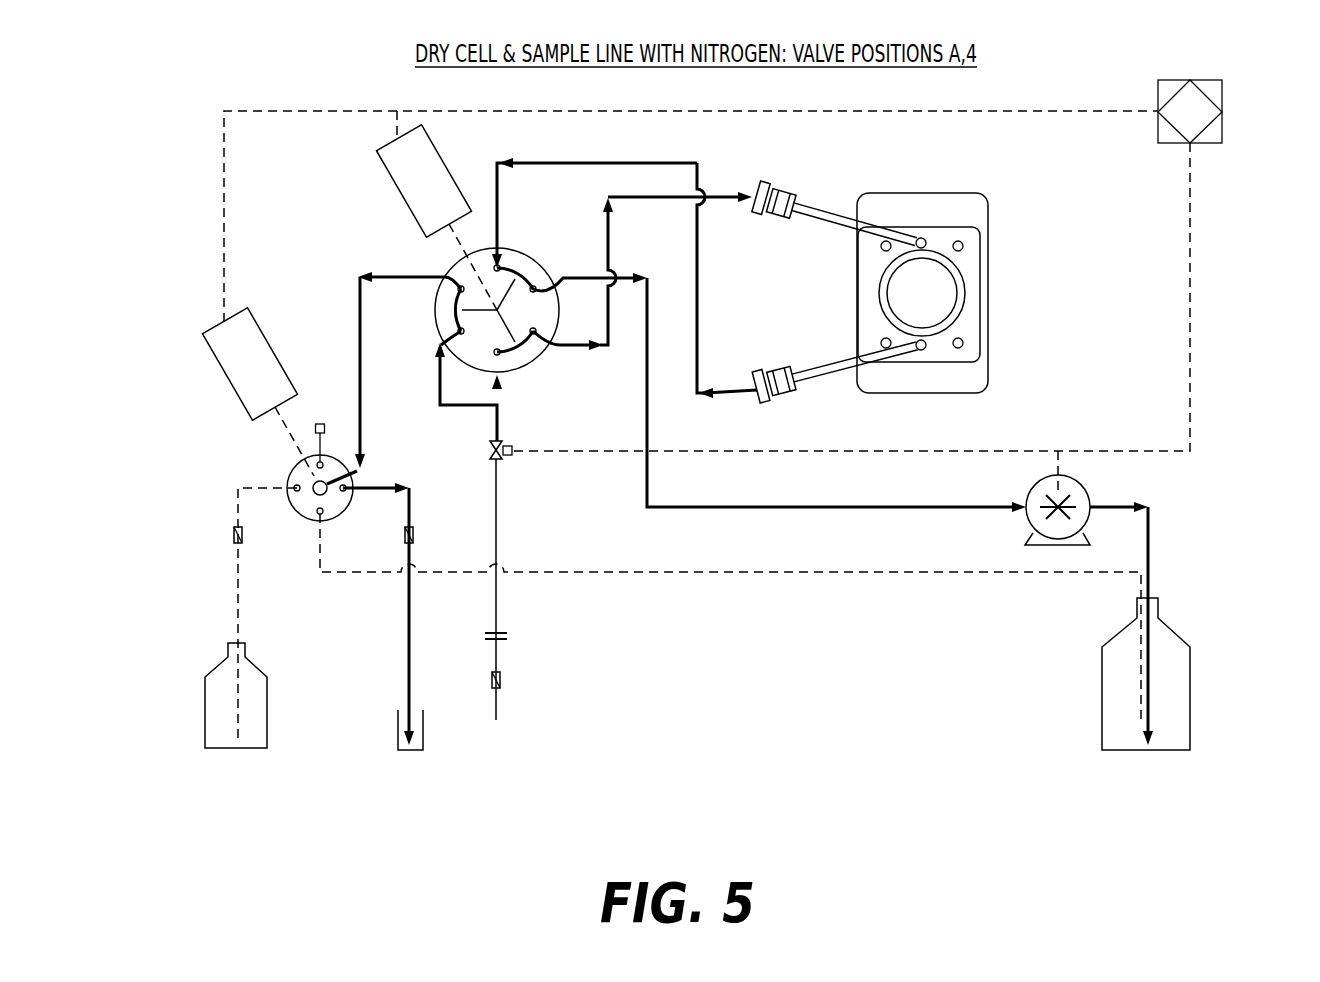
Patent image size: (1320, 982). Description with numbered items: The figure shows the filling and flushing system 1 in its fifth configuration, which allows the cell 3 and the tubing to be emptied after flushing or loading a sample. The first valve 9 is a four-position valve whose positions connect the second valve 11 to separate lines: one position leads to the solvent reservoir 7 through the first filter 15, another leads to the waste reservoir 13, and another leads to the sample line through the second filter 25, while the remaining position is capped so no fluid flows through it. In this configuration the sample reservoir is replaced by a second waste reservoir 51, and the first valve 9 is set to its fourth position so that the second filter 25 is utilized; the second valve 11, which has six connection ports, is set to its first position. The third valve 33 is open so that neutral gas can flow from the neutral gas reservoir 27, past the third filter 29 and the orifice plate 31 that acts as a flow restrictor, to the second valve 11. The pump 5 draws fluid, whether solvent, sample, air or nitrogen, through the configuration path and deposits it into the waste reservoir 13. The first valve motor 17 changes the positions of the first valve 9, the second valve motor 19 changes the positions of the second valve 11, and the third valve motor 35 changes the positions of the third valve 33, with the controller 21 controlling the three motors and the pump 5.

The filling and flushing system 1 is at (1266, 236).
The cell 3 is at (990, 270).
The pump 5 is at (1090, 493).
The solvent reservoir 7 is at (205, 704).
The first valve 9 is at (292, 467).
The second valve 11 is at (440, 271).
The waste reservoir 13 is at (1190, 675).
The first filter 15 is at (233, 540).
The first valve motor 17 is at (215, 324).
The second valve motor 19 is at (389, 142).
The controller 21 is at (1170, 80).
The second filter 25 is at (403, 535).
The neutral gas reservoir 27 is at (545, 770).
The third filter 29 is at (503, 684).
The orifice plate 31 is at (503, 633).
The third valve 33 is at (490, 443).
The third valve motor 35 is at (513, 456).
The second waste reservoir 51 is at (397, 722).